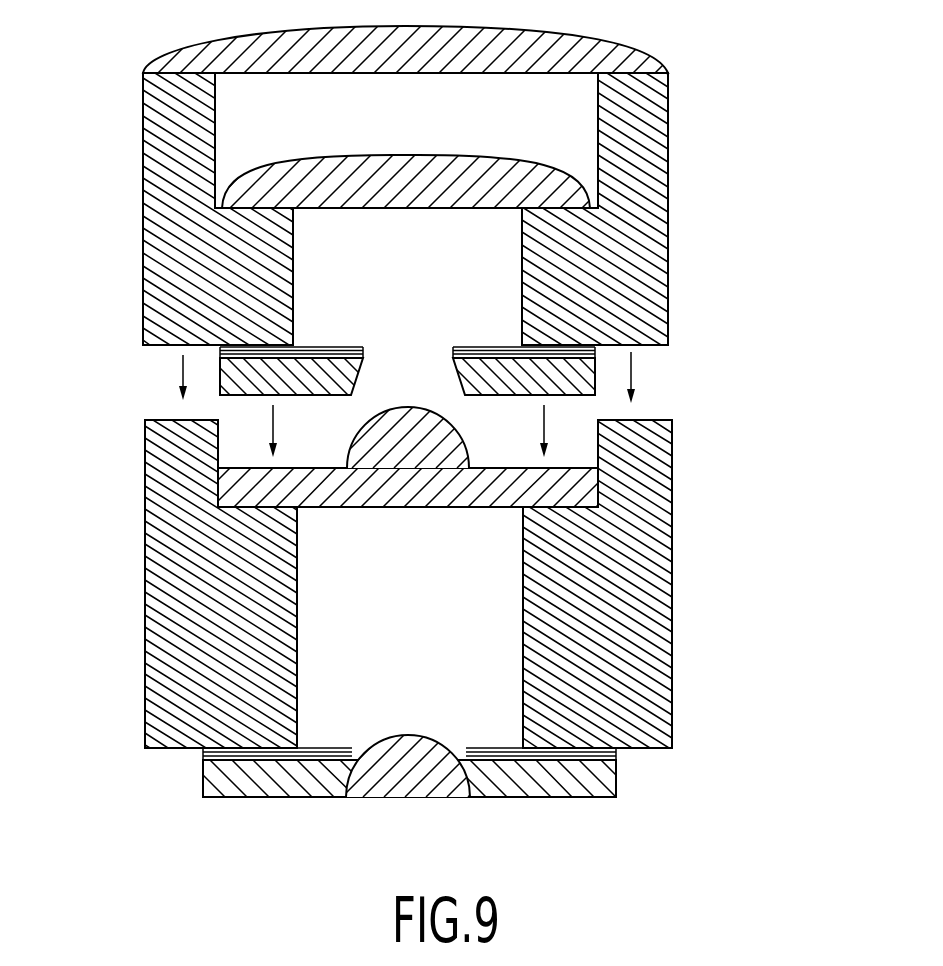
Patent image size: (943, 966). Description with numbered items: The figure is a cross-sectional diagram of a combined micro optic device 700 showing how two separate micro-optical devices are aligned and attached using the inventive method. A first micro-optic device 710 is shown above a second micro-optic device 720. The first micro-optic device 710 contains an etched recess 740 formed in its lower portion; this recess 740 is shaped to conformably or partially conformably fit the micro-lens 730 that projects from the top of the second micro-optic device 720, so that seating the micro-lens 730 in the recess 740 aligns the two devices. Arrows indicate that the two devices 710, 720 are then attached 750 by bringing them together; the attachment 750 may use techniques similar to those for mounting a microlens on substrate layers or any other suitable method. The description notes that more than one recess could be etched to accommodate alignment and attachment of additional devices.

The micro optic device 700 is at (118, 160).
The first micro-optic device 710 is at (690, 145).
The second micro-optic device 720 is at (690, 615).
The micro-lens 730 is at (407, 457).
The etched recess 740 is at (413, 376).
The attachment 750 is at (407, 404).